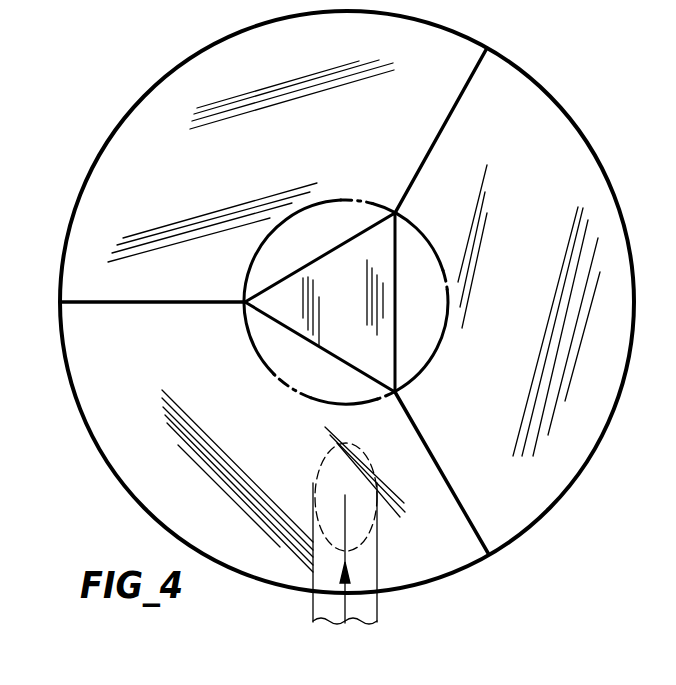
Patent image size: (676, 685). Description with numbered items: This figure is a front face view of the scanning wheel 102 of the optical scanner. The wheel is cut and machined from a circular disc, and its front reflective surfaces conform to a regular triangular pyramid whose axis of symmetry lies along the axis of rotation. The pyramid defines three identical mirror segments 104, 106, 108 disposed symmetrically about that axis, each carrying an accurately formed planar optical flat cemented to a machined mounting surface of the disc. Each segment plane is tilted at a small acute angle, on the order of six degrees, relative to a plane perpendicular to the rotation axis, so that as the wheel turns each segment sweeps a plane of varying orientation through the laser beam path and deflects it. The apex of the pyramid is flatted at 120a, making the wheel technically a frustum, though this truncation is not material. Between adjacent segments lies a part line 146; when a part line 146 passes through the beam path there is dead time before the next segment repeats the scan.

The scanning wheel 102 is at (125, 109).
The mirror segment 104 is at (268, 436).
The mirror segment 106 is at (331, 137).
The mirror segment 108 is at (540, 260).
The flatted apex portion 120a is at (387, 359).
The part line 146 is at (460, 100).